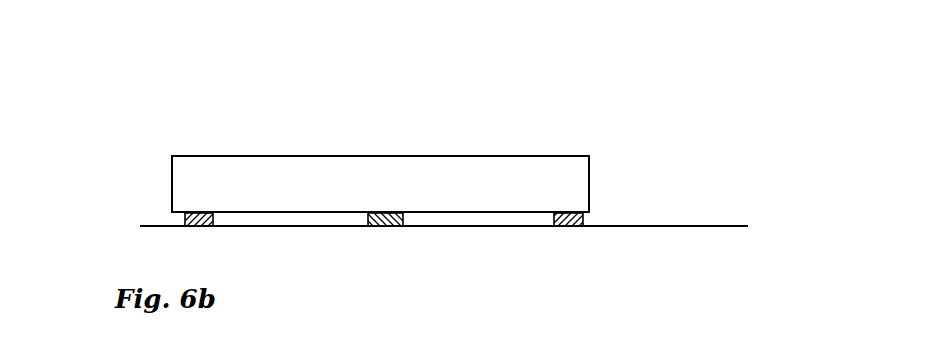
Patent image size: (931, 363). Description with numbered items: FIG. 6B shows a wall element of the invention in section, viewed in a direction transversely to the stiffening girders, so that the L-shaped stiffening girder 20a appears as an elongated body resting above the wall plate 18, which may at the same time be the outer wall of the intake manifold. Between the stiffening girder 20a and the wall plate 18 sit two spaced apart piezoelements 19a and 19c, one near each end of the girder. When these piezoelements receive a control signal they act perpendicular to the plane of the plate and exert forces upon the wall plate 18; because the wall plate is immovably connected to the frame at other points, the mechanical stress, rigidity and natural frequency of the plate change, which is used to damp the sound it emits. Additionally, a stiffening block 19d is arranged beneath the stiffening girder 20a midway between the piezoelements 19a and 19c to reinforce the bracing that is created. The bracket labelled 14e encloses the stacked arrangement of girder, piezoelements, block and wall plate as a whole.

The stiffening girder 20a is at (207, 155).
The substrate layer assembly 14e is at (757, 160).
The piezoelement 19a is at (185, 218).
The piezoelement 19c is at (587, 220).
The stiffening block 19d is at (382, 228).
The wall plate 18 is at (408, 228).